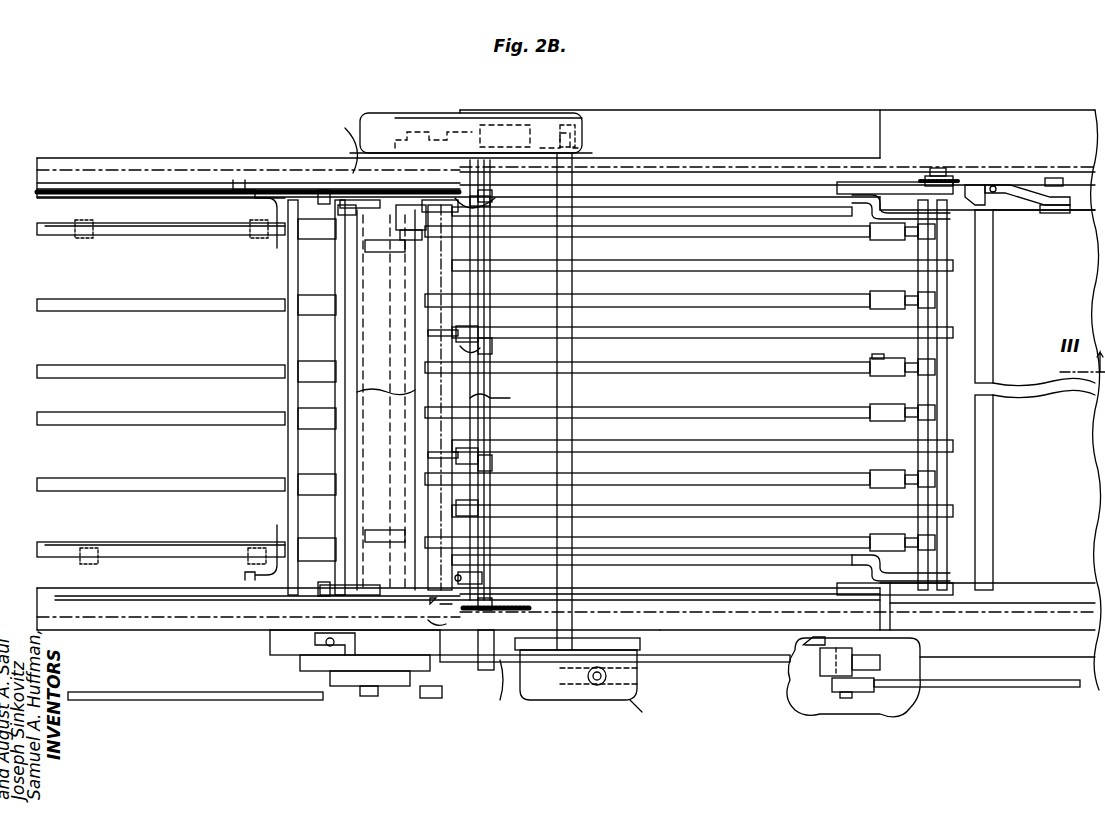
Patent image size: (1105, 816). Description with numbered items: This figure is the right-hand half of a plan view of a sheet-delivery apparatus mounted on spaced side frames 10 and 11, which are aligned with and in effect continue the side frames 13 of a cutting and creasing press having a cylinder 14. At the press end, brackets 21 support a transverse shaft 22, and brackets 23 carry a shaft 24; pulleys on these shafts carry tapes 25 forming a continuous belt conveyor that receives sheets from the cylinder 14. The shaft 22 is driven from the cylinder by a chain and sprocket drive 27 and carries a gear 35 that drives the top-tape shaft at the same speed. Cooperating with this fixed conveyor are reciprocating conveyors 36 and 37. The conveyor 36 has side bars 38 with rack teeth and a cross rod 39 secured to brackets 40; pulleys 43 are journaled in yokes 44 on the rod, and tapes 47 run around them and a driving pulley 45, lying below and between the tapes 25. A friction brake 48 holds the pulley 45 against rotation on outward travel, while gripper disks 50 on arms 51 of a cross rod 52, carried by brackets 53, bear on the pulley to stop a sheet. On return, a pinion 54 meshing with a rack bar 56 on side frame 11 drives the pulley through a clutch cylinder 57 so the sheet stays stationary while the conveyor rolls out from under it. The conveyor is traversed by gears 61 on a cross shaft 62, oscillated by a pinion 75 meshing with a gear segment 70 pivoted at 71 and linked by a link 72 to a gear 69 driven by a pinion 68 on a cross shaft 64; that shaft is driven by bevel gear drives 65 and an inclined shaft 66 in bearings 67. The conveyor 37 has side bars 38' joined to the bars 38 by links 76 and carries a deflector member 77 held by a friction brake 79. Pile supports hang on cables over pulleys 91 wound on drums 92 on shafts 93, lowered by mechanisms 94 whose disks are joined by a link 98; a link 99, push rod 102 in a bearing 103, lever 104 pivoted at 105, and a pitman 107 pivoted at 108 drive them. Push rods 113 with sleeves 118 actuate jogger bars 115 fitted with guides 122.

The side frame 10 is at (188, 620).
The side frame 11 is at (200, 165).
The press side frames 13 is at (945, 116).
The cylinder 14 is at (975, 372).
The brackets 21 is at (892, 185).
The transverse shaft 22 is at (930, 480).
The brackets 23 is at (478, 510).
The shaft 24 is at (494, 400).
The tapes 25 is at (734, 282).
The chain and sprocket drive 27 is at (1045, 175).
The gear 35 is at (945, 178).
The reciprocating conveyor 36 is at (815, 241).
The reciprocating conveyor 37 is at (163, 359).
The side bars 38 is at (777, 368).
The side bars 38' is at (248, 384).
The cross rod 39 is at (920, 316).
The brackets 40 is at (875, 200).
The pulleys 43 is at (843, 366).
The yokes 44 is at (884, 374).
The driving pulley 45 is at (450, 286).
The tapes 47 is at (797, 364).
The friction brake 48 is at (428, 598).
The gripper disks 50 is at (434, 334).
The arms 51 is at (494, 351).
The cross rod 52 is at (485, 318).
The brackets 53 is at (484, 579).
The pinion 54 is at (492, 200).
The rack bar 56 is at (161, 208).
The clutch cylinder 57 is at (412, 232).
The gears 61 is at (510, 192).
The cross shaft 62 is at (494, 466).
The cross shaft 64 is at (574, 527).
The bevel gear drives 65 is at (577, 669).
The inclined shaft 66 is at (708, 666).
The bearings 67 is at (630, 684).
The pinion 68 is at (578, 142).
The gear 69 is at (548, 130).
The gear segment 70 is at (428, 130).
The pivot 71 is at (404, 135).
The link 72 is at (520, 130).
The pinion 75 is at (506, 117).
The links 76 is at (436, 640).
The deflector member 77 is at (385, 333).
The friction brake 79 is at (338, 210).
The pulleys 91 is at (383, 387).
The drums 92 is at (375, 632).
The shafts 93 is at (390, 385).
The pile lowering mechanism 94 is at (400, 680).
The link 98 is at (192, 698).
The link 99 is at (432, 698).
The push rod 102 is at (494, 686).
The bearing 103 is at (480, 666).
The lever 104 is at (878, 665).
The pivot 105 is at (803, 642).
The pitman 107 is at (958, 687).
The pivot 108 is at (846, 700).
The push rods 113 is at (135, 182).
The jogger bars 115 is at (200, 226).
The sleeves 118 is at (312, 180).
The guides 122 is at (256, 238).